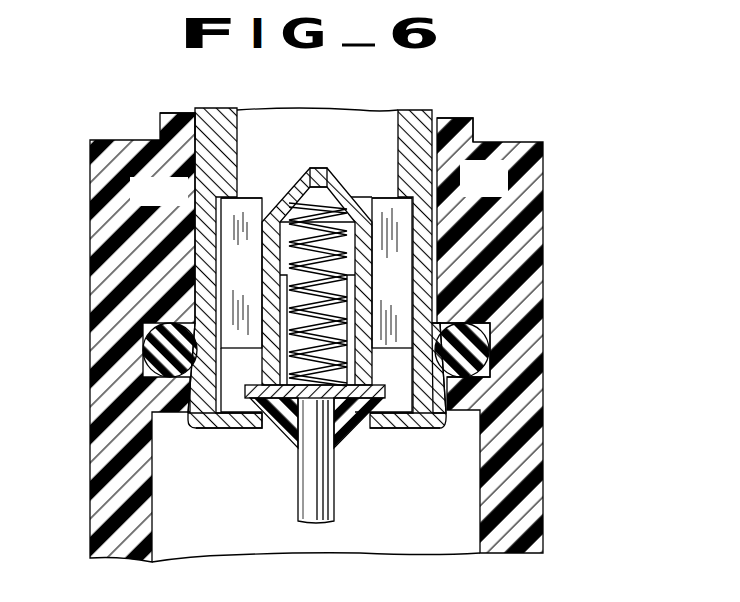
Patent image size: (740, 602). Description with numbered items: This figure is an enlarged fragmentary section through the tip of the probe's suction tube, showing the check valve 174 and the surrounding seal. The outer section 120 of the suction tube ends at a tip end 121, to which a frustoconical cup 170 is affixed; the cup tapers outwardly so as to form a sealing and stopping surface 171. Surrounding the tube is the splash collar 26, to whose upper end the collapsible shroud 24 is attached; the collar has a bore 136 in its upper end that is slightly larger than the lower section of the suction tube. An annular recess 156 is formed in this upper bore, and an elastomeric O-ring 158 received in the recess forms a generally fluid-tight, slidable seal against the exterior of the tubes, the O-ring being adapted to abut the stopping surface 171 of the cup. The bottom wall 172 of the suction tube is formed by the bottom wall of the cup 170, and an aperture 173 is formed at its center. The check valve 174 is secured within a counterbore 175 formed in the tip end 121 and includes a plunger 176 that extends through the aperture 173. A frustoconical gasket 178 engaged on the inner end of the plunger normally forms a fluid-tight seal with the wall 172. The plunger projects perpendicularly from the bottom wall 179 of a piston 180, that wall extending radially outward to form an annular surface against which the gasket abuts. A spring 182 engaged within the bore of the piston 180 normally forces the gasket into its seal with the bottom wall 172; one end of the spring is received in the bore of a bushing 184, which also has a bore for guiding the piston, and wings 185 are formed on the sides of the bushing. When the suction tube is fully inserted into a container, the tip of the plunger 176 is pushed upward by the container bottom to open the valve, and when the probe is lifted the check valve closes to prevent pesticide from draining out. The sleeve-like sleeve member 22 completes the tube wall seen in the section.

The sleeve member 22 is at (238, 110).
The collapsible shroud 24 is at (474, 124).
The splash collar 26 is at (546, 157).
The outer section of the suction tube 120 is at (413, 112).
The tip end of the outer suction tube section 121 is at (428, 294).
The bore 136 is at (197, 122).
The annular recess 156 is at (490, 328).
The O-ring 158 is at (481, 367).
The frustoconical cup 170 is at (191, 417).
The sealing and stopping surface 171 is at (452, 406).
The bottom wall 172 is at (228, 428).
The aperture 173 is at (360, 425).
The check valve 174 is at (403, 208).
The counterbore 175 is at (223, 216).
The plunger 176 is at (323, 497).
The frustoconical gasket 178 is at (278, 421).
The bottom wall of the piston 179 is at (250, 387).
The piston 180 is at (351, 363).
The spring 182 is at (324, 200).
The bushing 184 is at (308, 168).
The wings 185 is at (250, 198).